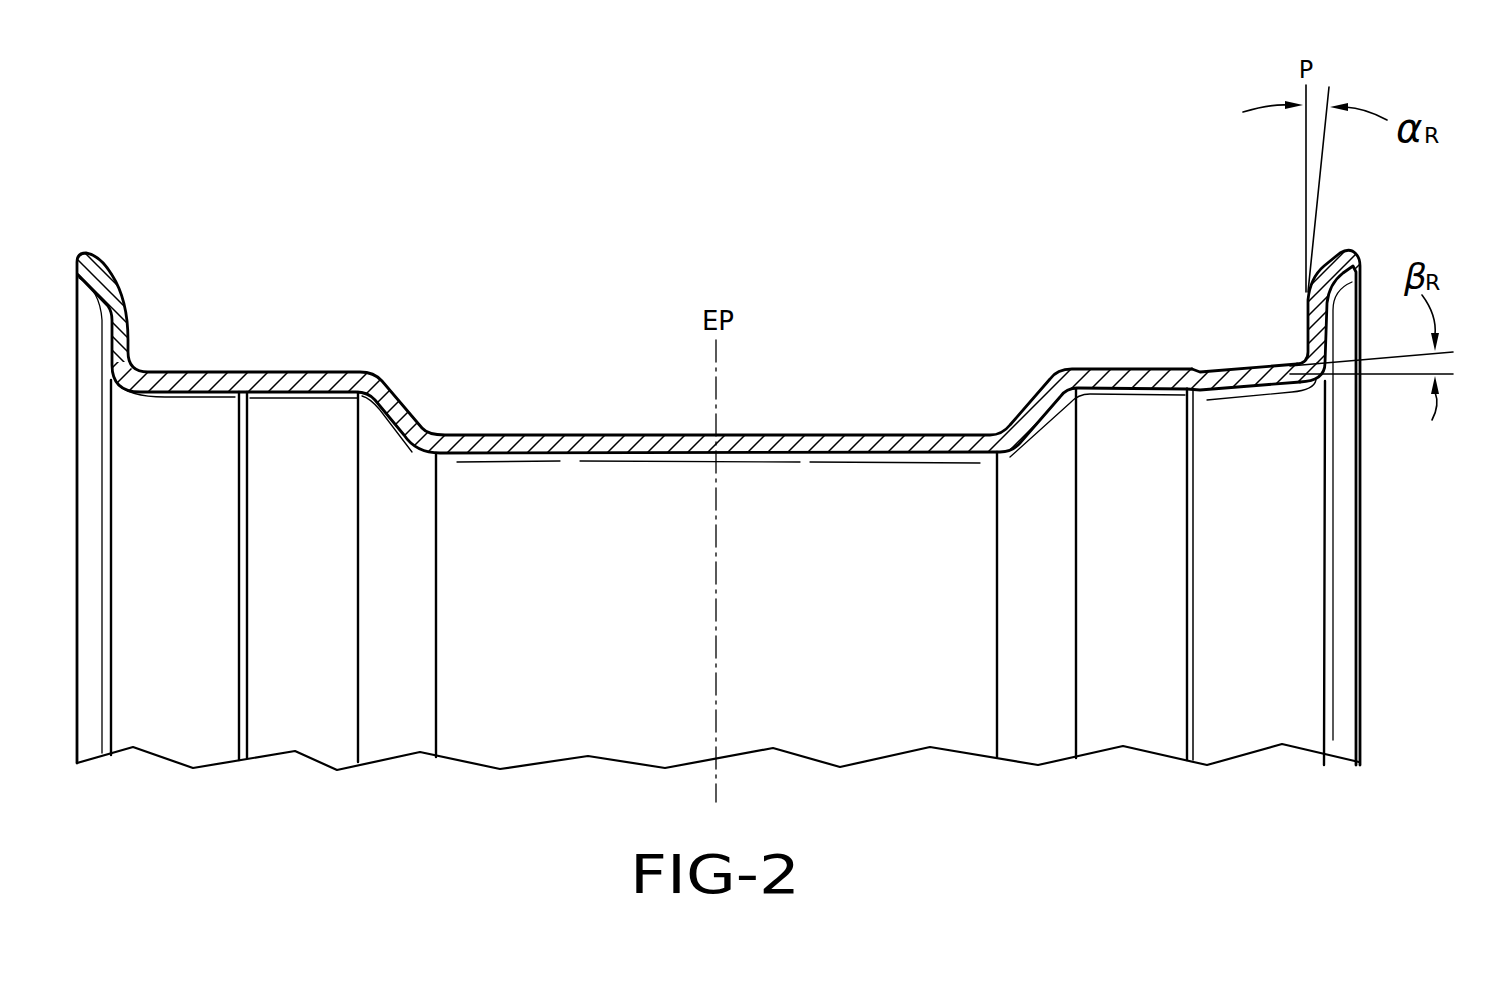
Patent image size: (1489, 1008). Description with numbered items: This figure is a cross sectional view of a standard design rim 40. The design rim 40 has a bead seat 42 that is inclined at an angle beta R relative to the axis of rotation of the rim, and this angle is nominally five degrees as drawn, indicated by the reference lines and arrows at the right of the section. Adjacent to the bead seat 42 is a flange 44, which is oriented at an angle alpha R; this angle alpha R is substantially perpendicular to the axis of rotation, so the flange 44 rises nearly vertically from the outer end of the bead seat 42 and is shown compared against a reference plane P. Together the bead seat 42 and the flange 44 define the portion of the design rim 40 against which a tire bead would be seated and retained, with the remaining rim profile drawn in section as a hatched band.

The design rim 40 is at (1010, 387).
The bead seat 42 is at (1215, 368).
The flange 44 is at (1305, 332).